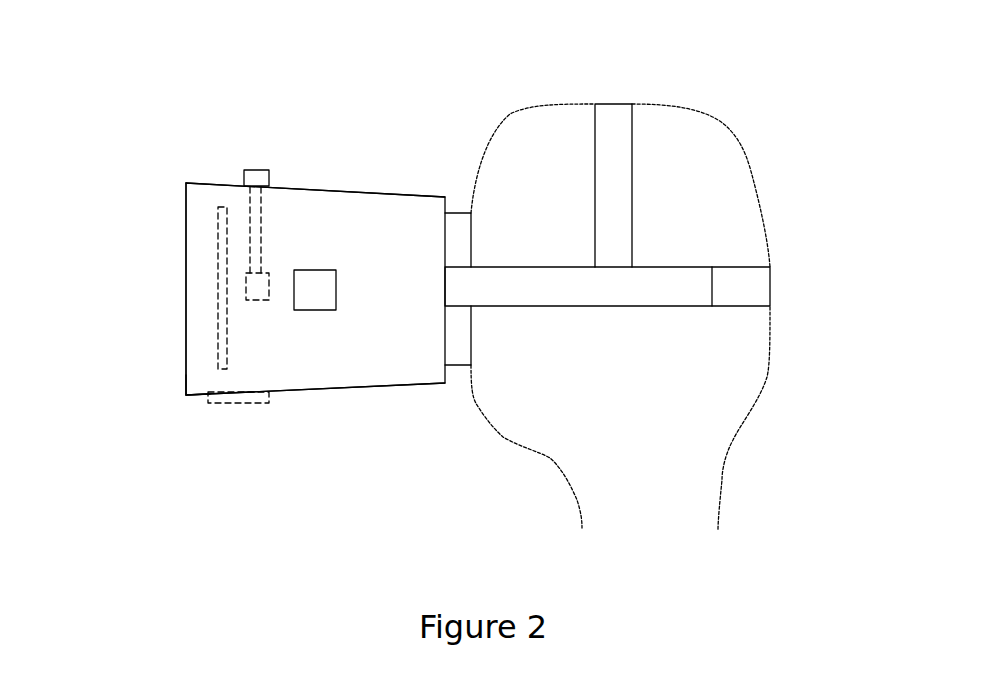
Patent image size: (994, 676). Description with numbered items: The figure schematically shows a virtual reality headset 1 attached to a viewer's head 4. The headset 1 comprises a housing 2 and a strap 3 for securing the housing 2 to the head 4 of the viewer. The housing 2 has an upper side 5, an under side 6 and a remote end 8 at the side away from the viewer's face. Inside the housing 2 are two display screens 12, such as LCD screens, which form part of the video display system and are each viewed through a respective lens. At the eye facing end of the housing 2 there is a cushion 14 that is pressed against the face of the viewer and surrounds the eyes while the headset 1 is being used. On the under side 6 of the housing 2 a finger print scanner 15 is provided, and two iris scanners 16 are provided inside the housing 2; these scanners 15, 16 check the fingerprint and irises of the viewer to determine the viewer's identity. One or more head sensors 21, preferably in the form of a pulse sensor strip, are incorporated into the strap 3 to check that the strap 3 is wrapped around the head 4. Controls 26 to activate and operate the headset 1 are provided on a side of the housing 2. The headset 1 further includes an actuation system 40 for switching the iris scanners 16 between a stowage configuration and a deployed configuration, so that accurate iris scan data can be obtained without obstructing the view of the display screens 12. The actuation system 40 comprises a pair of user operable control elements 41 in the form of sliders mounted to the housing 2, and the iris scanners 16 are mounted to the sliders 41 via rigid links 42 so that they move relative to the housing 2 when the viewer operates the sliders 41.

The virtual reality headset 1 is at (140, 161).
The housing 2 is at (185, 394).
The strap 3 is at (632, 135).
The head 4 is at (748, 163).
The upper side 5 is at (345, 191).
The under side 6 is at (402, 386).
The remote end 8 is at (185, 227).
The display screen 12 is at (218, 307).
The cushion 14 is at (458, 213).
The finger print scanner 15 is at (227, 403).
The iris scanner 16 is at (263, 302).
The head sensor 21 is at (770, 278).
The controls 26 is at (313, 309).
The actuation system 40 is at (232, 196).
The user operable control element 41 is at (250, 168).
The rigid link 42 is at (259, 237).